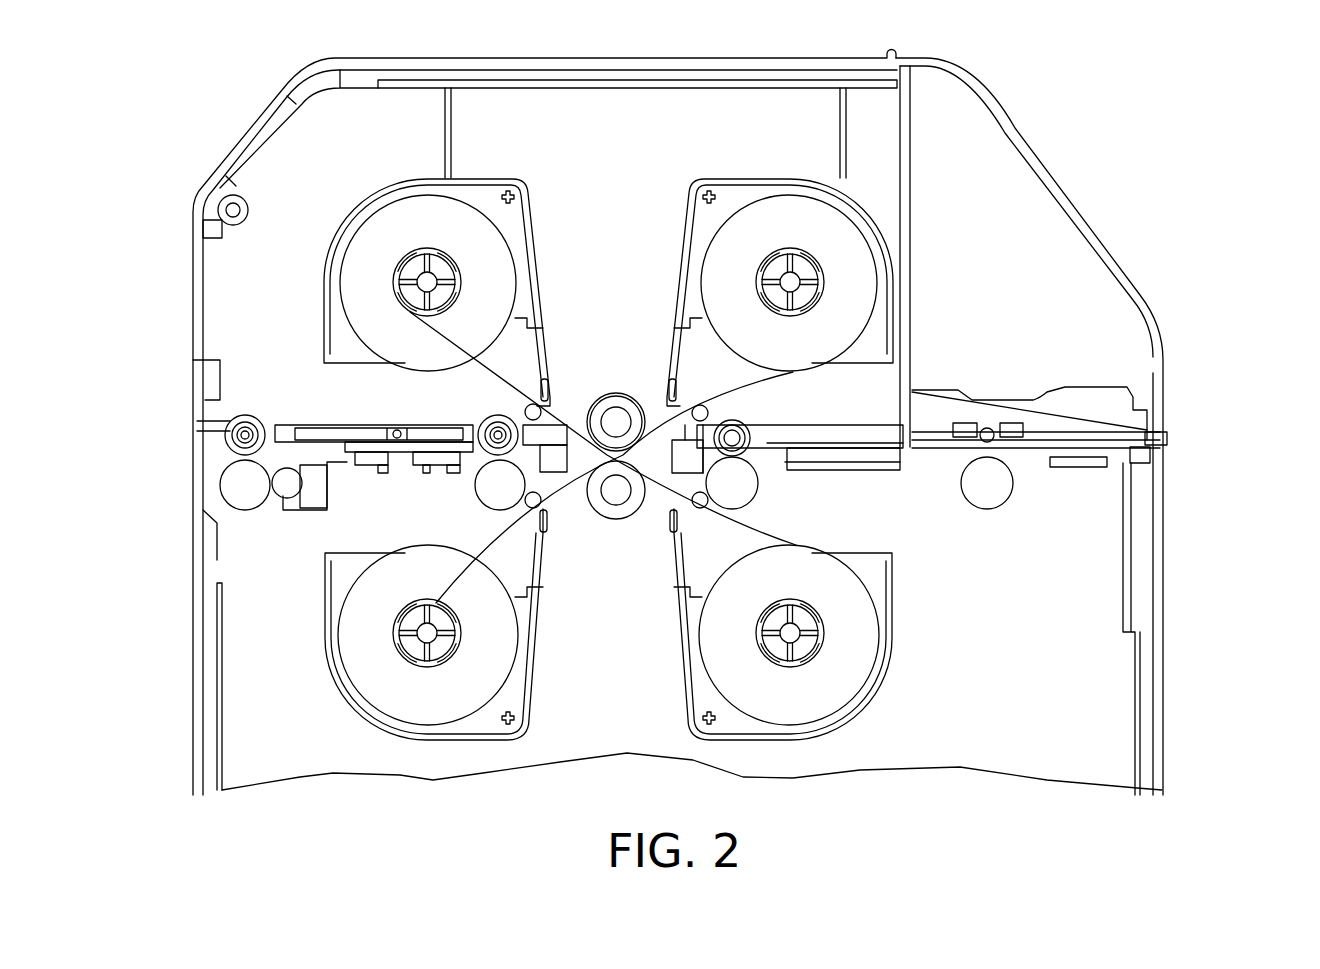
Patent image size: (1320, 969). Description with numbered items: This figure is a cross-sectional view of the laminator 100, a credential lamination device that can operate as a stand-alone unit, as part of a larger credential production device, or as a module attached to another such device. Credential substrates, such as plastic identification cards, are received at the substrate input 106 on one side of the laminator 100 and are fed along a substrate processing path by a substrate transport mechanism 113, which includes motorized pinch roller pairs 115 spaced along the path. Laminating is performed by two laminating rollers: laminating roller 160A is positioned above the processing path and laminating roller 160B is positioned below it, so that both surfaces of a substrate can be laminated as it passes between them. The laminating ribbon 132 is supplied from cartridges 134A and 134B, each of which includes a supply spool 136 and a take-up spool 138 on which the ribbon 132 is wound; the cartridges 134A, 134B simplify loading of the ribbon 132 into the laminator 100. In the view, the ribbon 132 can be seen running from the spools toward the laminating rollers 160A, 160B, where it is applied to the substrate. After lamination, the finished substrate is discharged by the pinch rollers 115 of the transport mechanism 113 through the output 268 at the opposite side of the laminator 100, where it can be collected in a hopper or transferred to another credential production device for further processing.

The laminator 100 is at (1182, 180).
The substrate input 106 is at (1182, 422).
The substrate transport mechanism 113 is at (1033, 398).
The pinch roller pairs 115 is at (208, 492).
The ribbon 132 is at (765, 385).
The cartridge 134A is at (900, 222).
The cartridge 134B is at (337, 693).
The supply spool 136 is at (850, 310).
The take-up spool 138 is at (350, 287).
The laminating roller 160A is at (612, 393).
The laminating roller 160B is at (615, 519).
The output 268 is at (207, 457).